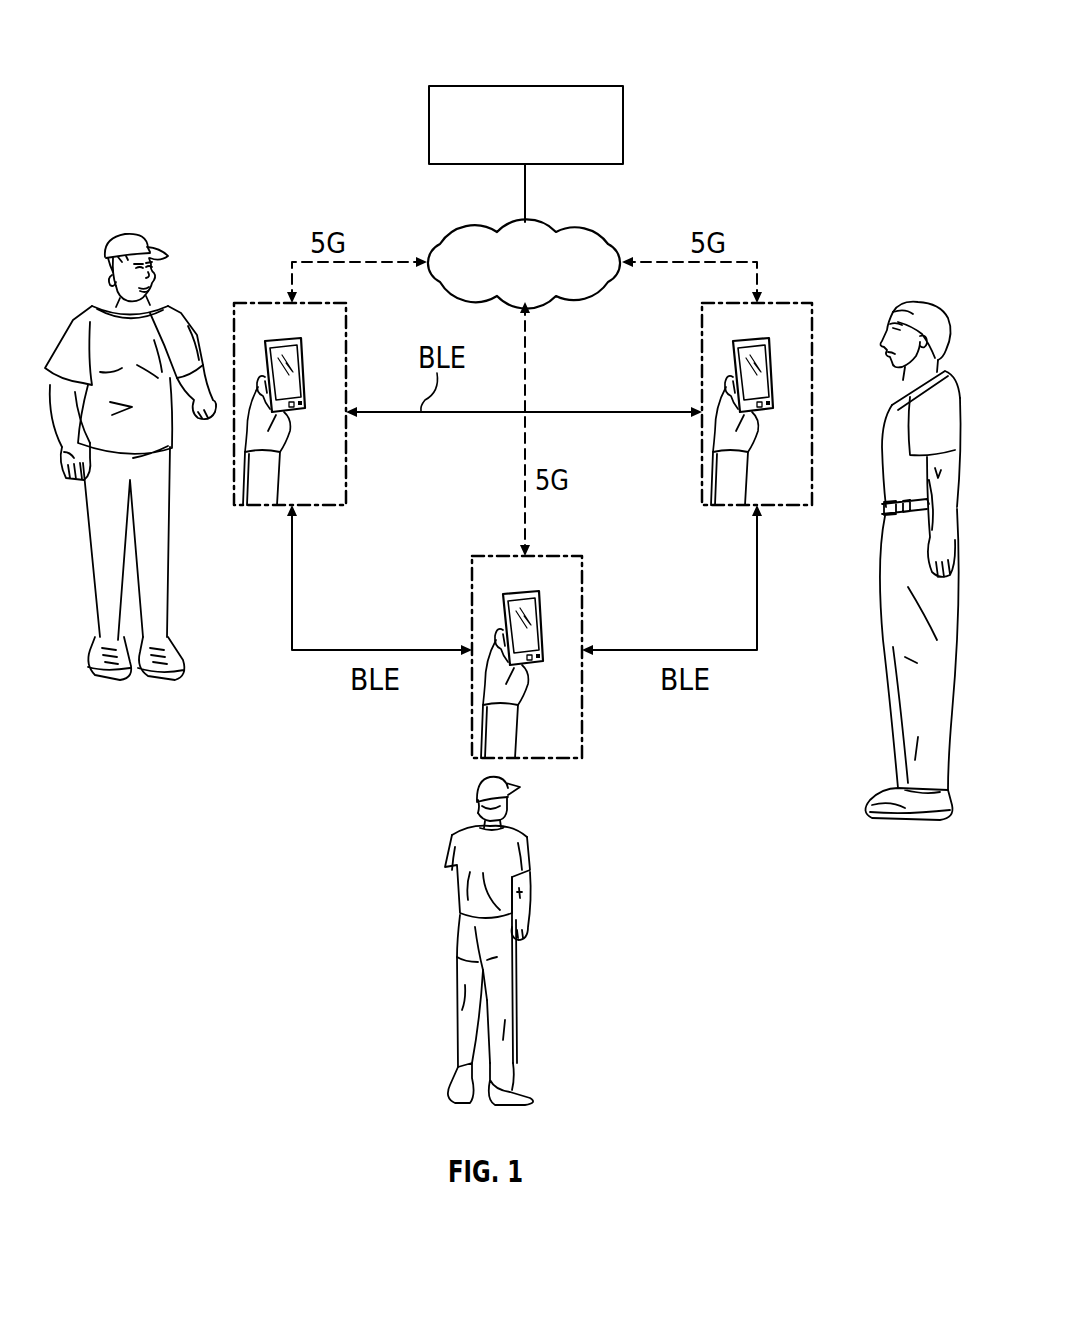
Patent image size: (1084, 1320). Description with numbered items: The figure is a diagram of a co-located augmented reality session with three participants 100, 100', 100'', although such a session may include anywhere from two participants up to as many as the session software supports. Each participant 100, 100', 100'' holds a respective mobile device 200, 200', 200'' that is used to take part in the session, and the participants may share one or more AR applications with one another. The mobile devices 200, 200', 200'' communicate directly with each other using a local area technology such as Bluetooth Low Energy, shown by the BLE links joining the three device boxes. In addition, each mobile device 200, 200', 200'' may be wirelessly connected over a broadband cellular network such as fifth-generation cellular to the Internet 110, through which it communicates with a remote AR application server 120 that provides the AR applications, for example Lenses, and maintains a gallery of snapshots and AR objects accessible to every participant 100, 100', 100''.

The participant 100 is at (130, 423).
The participant 100' is at (912, 528).
The participant 100'' is at (441, 941).
The Internet 110 is at (470, 228).
The AR application server 120 is at (492, 86).
The mobile device 200 is at (331, 404).
The mobile device 200' is at (716, 404).
The mobile device 200'' is at (478, 657).